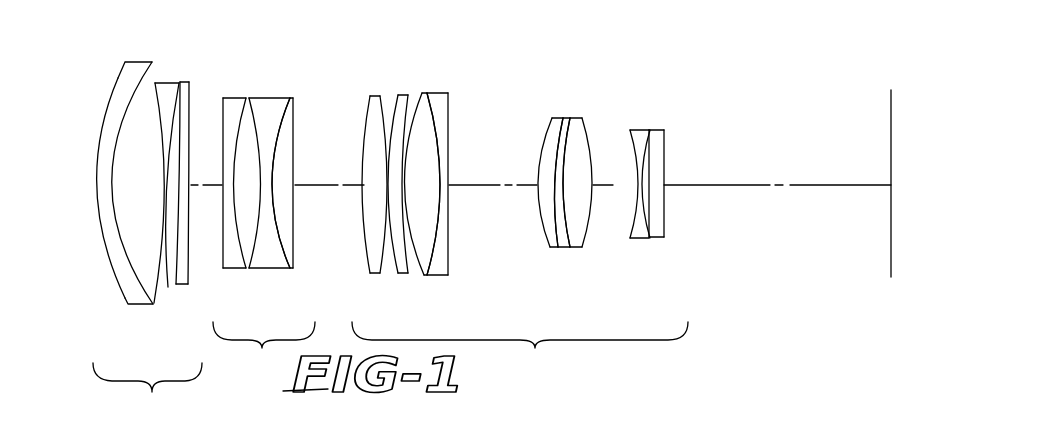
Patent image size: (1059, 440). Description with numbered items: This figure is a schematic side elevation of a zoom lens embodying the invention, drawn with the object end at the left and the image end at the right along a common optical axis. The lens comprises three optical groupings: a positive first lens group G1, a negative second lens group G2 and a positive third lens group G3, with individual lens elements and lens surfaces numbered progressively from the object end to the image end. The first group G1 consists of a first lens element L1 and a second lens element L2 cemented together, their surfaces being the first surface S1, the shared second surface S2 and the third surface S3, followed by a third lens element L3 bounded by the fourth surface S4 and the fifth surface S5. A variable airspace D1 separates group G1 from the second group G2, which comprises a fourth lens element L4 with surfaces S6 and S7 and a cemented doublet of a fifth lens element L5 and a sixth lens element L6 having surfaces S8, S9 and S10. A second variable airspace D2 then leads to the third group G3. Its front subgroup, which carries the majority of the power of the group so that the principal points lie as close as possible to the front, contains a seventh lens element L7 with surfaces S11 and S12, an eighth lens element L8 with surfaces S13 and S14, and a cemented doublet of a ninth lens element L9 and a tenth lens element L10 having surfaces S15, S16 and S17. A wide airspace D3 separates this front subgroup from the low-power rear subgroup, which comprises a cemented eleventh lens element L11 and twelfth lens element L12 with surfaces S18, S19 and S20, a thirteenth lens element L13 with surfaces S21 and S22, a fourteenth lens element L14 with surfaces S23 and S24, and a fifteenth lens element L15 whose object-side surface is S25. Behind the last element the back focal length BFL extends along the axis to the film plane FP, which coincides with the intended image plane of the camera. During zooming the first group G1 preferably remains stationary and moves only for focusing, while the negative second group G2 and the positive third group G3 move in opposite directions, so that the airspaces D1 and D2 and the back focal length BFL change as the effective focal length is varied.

The first lens element L1 is at (118, 78).
The second lens element L2 is at (155, 83).
The third lens element L3 is at (188, 82).
The fourth lens element L4 is at (238, 98).
The fifth lens element L5 is at (273, 98).
The sixth lens element L6 is at (298, 108).
The seventh lens element L7 is at (375, 96).
The eighth lens element L8 is at (404, 95).
The ninth lens element L9 is at (432, 117).
The tenth lens element L10 is at (447, 113).
The eleventh lens element L11 is at (557, 118).
The twelfth lens element L12 is at (571, 118).
The thirteenth lens element L13 is at (583, 130).
The fourteenth lens element L14 is at (642, 130).
The fifteenth lens element L15 is at (664, 158).
The first lens surface S1 is at (109, 272).
The second lens surface S2 is at (141, 263).
The third lens surface S3 is at (157, 304).
The fourth lens surface S4 is at (160, 276).
The fifth lens surface S5 is at (181, 247).
The sixth lens surface S6 is at (223, 245).
The seventh lens surface S7 is at (237, 225).
The eighth lens surface S8 is at (255, 228).
The ninth lens surface S9 is at (300, 265).
The tenth lens surface S10 is at (295, 220).
The eleventh lens surface S11 is at (365, 250).
The twelfth lens surface S12 is at (382, 262).
The thirteenth lens surface S13 is at (392, 265).
The fourteenth lens surface S14 is at (408, 257).
The fifteenth lens surface S15 is at (405, 253).
The sixteenth lens surface S16 is at (435, 230).
The seventeenth lens surface S17 is at (446, 203).
The eighteenth lens surface S18 is at (541, 228).
The nineteenth lens surface S19 is at (563, 247).
The twentieth lens surface S20 is at (574, 222).
The twenty-first lens surface S21 is at (588, 230).
The twenty-second lens surface S22 is at (589, 221).
The twenty-third lens surface S23 is at (646, 207).
The twenty-fourth lens surface S24 is at (664, 198).
The twenty-fifth lens surface S25 is at (664, 188).
The first lens group G1 is at (147, 396).
The second lens group G2 is at (264, 352).
The third lens group G3 is at (520, 353).
The first airspace D1 is at (209, 170).
The second airspace D2 is at (329, 171).
The third airspace D3 is at (493, 171).
The back focal length BFL is at (777, 171).
The film plane FP is at (890, 119).